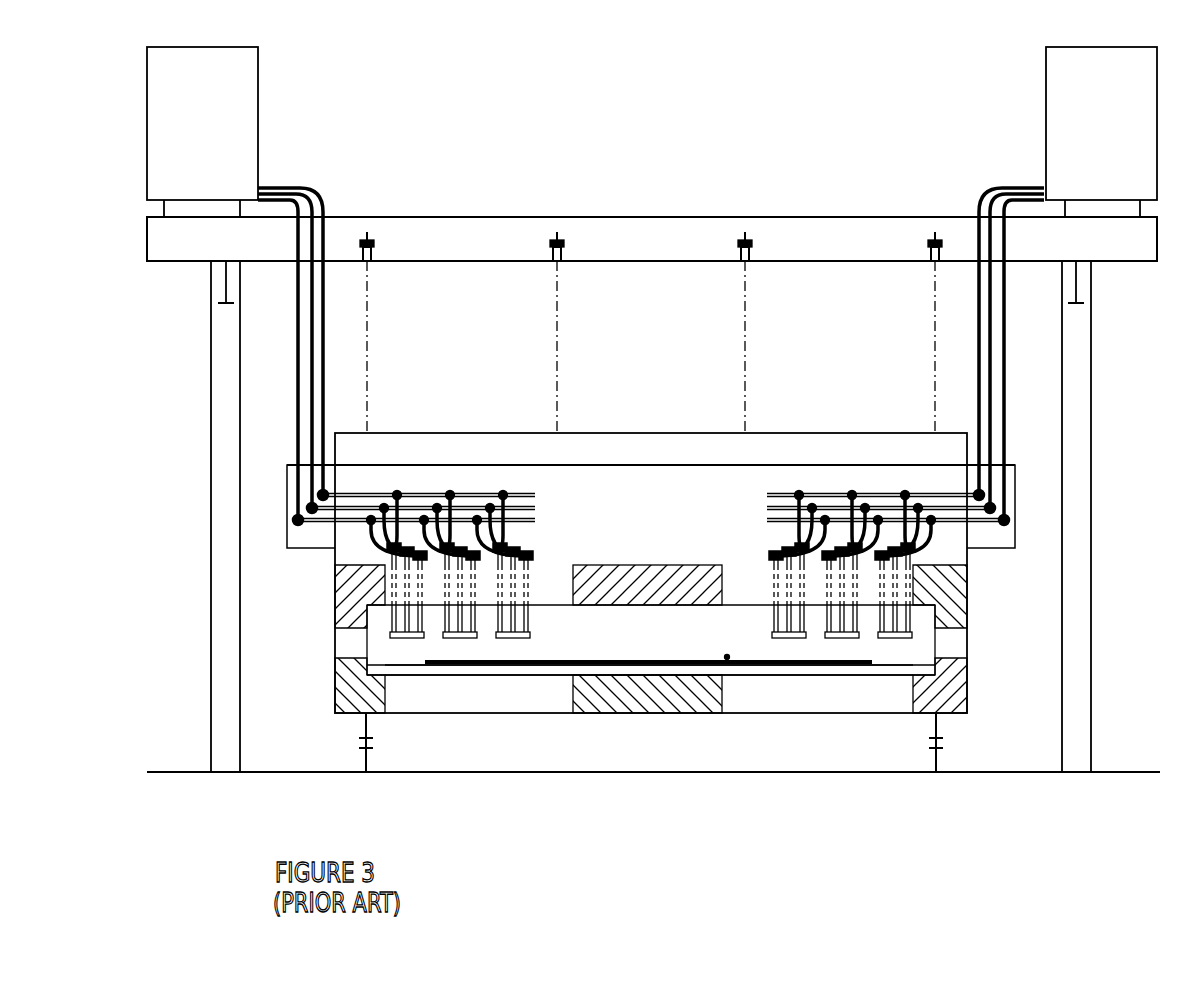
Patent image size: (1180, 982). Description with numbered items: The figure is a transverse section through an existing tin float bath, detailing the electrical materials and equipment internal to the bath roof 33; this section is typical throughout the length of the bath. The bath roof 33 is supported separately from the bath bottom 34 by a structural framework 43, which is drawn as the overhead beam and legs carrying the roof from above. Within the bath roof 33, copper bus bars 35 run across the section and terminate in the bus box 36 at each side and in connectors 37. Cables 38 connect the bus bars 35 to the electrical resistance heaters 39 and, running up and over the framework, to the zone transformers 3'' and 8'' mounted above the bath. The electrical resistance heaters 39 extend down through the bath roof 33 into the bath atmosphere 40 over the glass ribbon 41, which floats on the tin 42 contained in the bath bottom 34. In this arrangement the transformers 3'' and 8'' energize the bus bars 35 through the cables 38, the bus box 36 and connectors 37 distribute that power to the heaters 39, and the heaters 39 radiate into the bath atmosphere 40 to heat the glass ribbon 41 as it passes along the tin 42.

The transformer 3'' is at (232, 132).
The transformer 8'' is at (1069, 132).
The structural framework 43 is at (668, 216).
The cables 38 is at (342, 370).
The bath roof 33 is at (668, 432).
The bath bottom 34 is at (335, 688).
The copper bus bars 35 is at (523, 497).
The bus box 36 is at (288, 550).
The connectors 37 is at (530, 557).
The electrical resistance heaters 39 is at (535, 633).
The bath atmosphere 40 is at (725, 656).
The glass ribbon 41 is at (614, 638).
The tin 42 is at (462, 668).